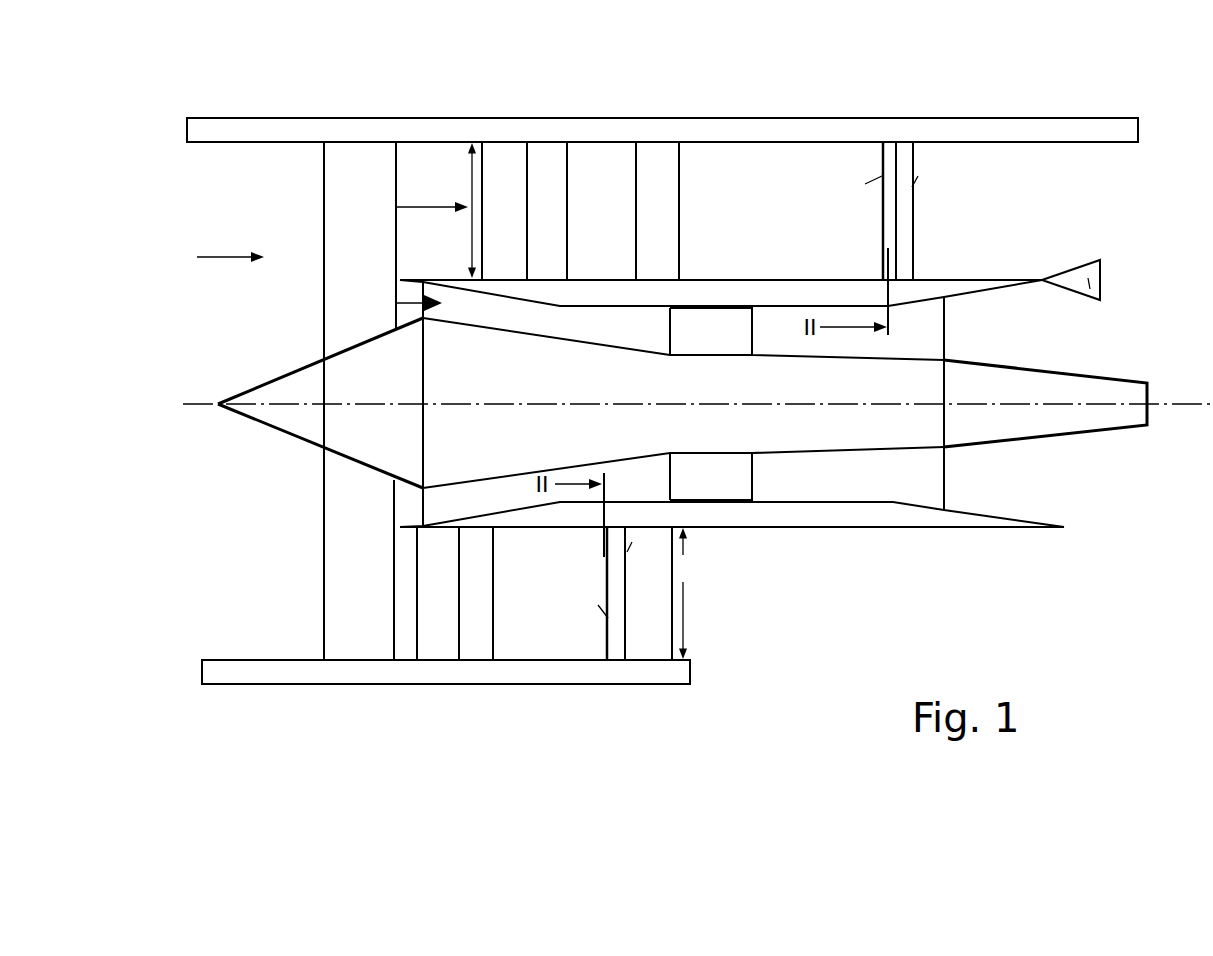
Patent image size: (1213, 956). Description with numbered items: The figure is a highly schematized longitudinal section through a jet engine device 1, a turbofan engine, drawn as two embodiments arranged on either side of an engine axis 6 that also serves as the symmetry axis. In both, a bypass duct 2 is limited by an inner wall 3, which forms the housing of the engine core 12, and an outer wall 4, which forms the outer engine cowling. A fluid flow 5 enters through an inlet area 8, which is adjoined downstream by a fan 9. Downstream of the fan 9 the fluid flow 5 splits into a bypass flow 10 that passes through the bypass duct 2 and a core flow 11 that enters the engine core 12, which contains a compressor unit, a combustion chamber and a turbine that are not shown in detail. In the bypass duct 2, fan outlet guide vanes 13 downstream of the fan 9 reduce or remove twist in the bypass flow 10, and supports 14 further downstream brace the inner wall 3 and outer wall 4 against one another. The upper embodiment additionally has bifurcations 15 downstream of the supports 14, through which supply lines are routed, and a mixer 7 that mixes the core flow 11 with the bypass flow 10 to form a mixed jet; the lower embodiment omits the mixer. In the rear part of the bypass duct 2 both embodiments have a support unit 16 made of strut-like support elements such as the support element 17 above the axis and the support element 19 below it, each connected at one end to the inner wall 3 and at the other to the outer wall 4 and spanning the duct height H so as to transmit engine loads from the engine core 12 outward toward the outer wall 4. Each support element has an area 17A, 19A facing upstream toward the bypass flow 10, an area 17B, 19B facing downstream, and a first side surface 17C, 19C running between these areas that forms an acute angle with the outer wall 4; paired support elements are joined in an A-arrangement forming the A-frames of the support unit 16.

The jet engine device 1 is at (150, 96).
The bypass duct 2 is at (983, 162).
The inner wall 3 is at (1005, 277).
The outer wall 4 is at (1112, 128).
The fluid flow 5 is at (214, 255).
The engine axis 6 is at (200, 400).
The mixer 7 is at (1090, 283).
The inlet area 8 is at (290, 165).
The fan 9 is at (352, 165).
The bypass flow 10 is at (425, 205).
The core flow 11 is at (410, 298).
The engine core 12 is at (923, 338).
The fan outlet guide vanes 13 is at (500, 162).
The supports 14 is at (603, 162).
The bifurcations 15 is at (723, 162).
The support unit 16 is at (885, 145).
The support element 17 is at (920, 148).
The area facing upstream 17A is at (878, 176).
The area facing downstream 17B is at (913, 187).
The first side surface 17C is at (886, 142).
The support element 19 is at (634, 632).
The area facing upstream 19A is at (605, 615).
The area facing downstream 19B is at (628, 552).
The first side surface 19C is at (618, 643).
The duct height H is at (467, 155).